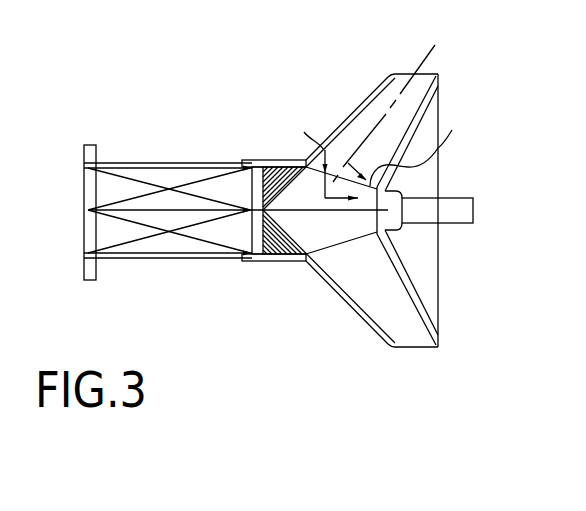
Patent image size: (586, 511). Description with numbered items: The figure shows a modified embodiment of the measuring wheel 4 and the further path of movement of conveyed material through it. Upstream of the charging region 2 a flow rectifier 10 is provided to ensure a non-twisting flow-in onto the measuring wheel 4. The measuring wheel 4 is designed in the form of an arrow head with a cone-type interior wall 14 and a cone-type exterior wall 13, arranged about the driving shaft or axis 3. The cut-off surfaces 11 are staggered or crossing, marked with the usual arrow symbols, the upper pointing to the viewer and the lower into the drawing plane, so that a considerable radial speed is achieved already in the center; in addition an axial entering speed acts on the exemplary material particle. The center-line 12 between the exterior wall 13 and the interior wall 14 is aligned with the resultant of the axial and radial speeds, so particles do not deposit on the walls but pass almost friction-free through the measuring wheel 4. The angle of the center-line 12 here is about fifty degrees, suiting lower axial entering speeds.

The charging region 2 is at (256, 260).
The driving shaft or axis 3 is at (447, 199).
The measuring wheel 4 is at (426, 258).
The flow rectifier 10 is at (153, 247).
The cut-off surfaces 11 is at (268, 161).
The center-line 12 is at (400, 128).
The exterior wall 13 is at (372, 326).
The interior wall 14 is at (440, 314).